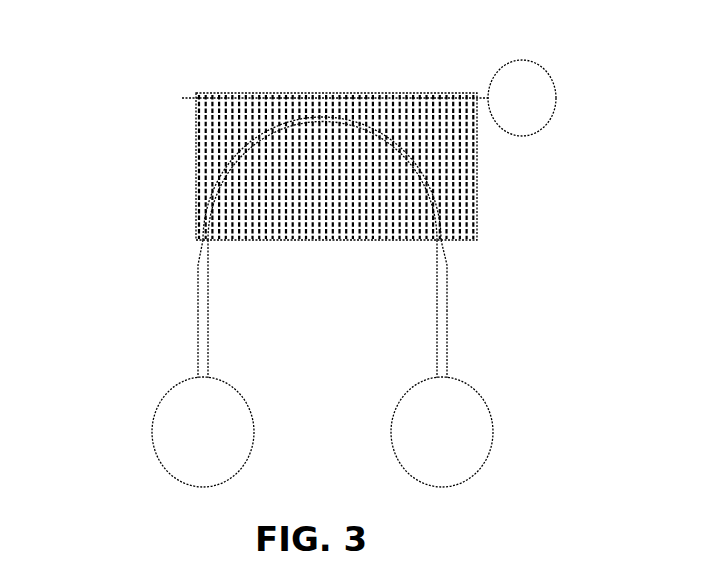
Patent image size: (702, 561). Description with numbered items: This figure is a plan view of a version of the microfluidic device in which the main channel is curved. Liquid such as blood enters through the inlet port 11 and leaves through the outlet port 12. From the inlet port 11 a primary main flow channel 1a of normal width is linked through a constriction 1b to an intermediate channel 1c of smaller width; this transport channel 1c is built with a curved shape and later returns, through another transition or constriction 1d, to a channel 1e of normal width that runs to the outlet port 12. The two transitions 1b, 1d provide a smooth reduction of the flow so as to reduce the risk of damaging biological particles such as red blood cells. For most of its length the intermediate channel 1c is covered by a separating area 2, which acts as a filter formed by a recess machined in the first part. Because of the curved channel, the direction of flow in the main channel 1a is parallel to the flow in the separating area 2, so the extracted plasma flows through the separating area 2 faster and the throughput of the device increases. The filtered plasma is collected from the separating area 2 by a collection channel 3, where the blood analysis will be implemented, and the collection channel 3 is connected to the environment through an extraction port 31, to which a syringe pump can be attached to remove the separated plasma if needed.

The primary main flow channel 1a is at (197, 337).
The constriction 1b is at (198, 255).
The intermediate channel 1c is at (226, 169).
The transition or constriction 1d is at (446, 257).
The channel having the normal width 1e is at (447, 320).
The separating area 2 is at (445, 170).
The collection channel 3 is at (182, 98).
The extraction port 31 is at (517, 99).
The inlet port 11 is at (192, 431).
The outlet port 12 is at (437, 438).